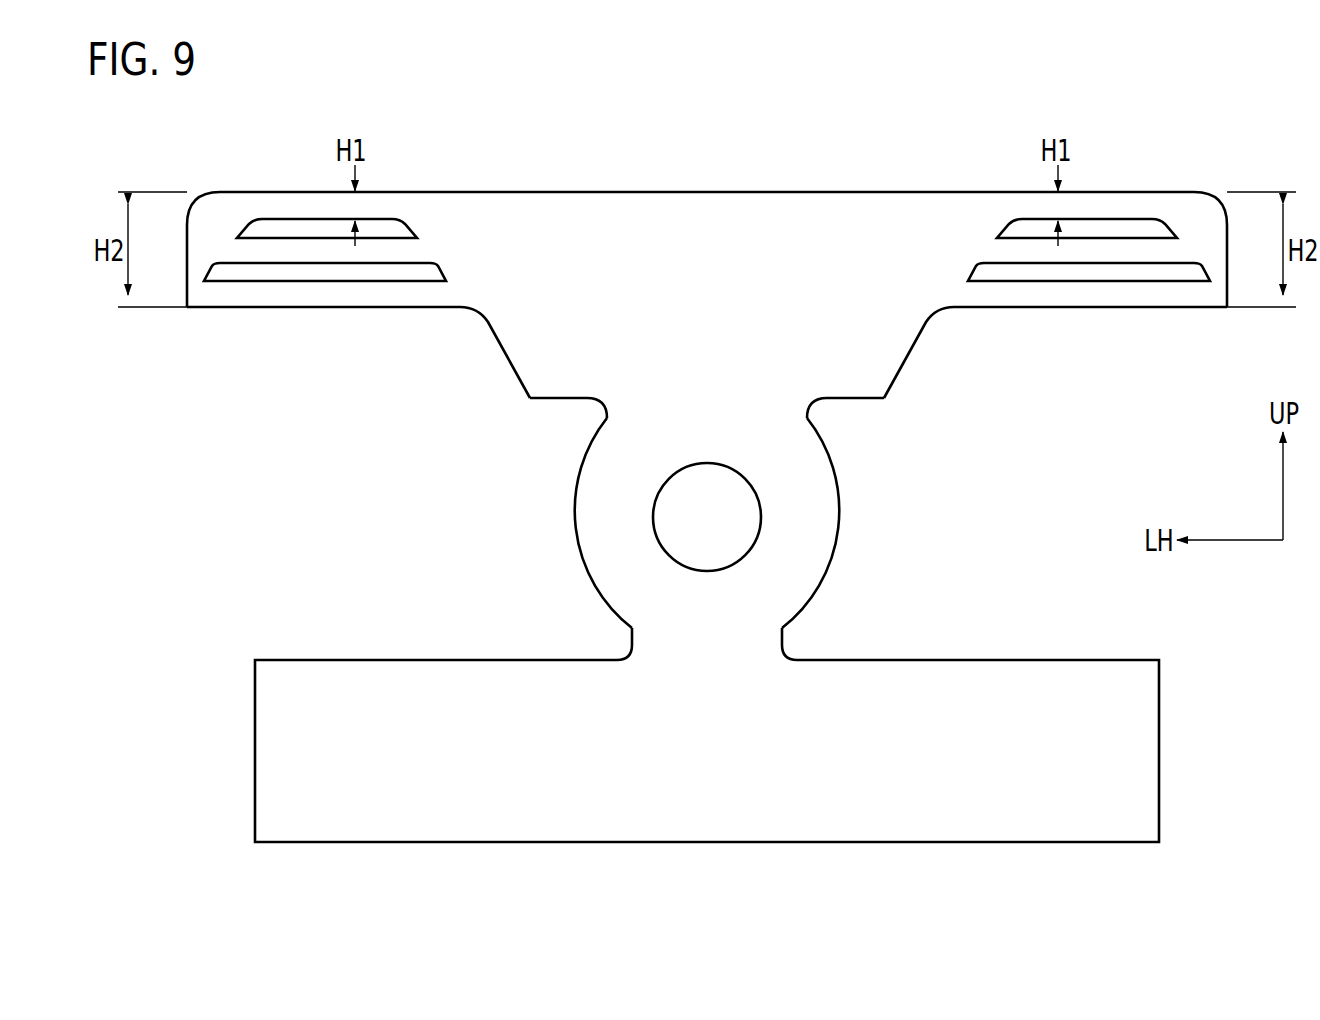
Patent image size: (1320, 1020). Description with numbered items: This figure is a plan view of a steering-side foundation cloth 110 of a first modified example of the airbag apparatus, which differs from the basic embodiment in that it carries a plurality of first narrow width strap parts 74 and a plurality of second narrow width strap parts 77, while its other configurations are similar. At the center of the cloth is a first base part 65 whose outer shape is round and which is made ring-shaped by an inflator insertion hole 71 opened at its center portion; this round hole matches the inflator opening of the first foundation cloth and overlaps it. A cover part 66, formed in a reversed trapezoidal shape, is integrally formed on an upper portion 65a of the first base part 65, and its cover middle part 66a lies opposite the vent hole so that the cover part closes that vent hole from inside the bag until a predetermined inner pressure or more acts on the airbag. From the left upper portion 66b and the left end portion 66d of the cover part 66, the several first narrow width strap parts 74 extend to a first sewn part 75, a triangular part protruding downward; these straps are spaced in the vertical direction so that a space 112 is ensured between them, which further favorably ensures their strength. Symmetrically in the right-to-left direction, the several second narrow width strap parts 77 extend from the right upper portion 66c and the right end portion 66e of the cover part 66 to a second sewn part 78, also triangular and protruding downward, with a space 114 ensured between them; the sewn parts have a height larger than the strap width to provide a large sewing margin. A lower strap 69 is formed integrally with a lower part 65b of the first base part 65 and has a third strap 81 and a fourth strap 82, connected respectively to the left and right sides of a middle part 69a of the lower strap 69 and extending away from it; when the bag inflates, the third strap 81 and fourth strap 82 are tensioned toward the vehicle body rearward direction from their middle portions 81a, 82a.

The steering-side foundation cloth 110 is at (803, 186).
The cover part 66 is at (705, 213).
The cover middle part 66a is at (707, 270).
The left upper portion of the cover part 66b is at (440, 213).
The right upper portion of the cover part 66c is at (971, 213).
The left end portion of the cover part 66d is at (477, 280).
The right end portion of the cover part 66e is at (947, 288).
The first sewn part 75 is at (212, 225).
The second sewn part 78 is at (1200, 225).
The first narrow width strap parts 74 is at (298, 293).
The second narrow width strap parts 77 is at (1115, 292).
The space 112 is at (287, 224).
The space 114 is at (1158, 268).
The first base part 65 is at (822, 515).
The upper portion of the first base part 65a is at (707, 380).
The lower part of the first base part 65b is at (707, 648).
The inflator insertion hole 71 is at (652, 518).
The lower strap 69 is at (692, 807).
The middle part of the lower strap 69a is at (720, 788).
The third strap 81 is at (343, 807).
The middle portion of the third strap 81a is at (432, 807).
The fourth strap 82 is at (1068, 807).
The middle portion of the fourth strap 82a is at (980, 807).